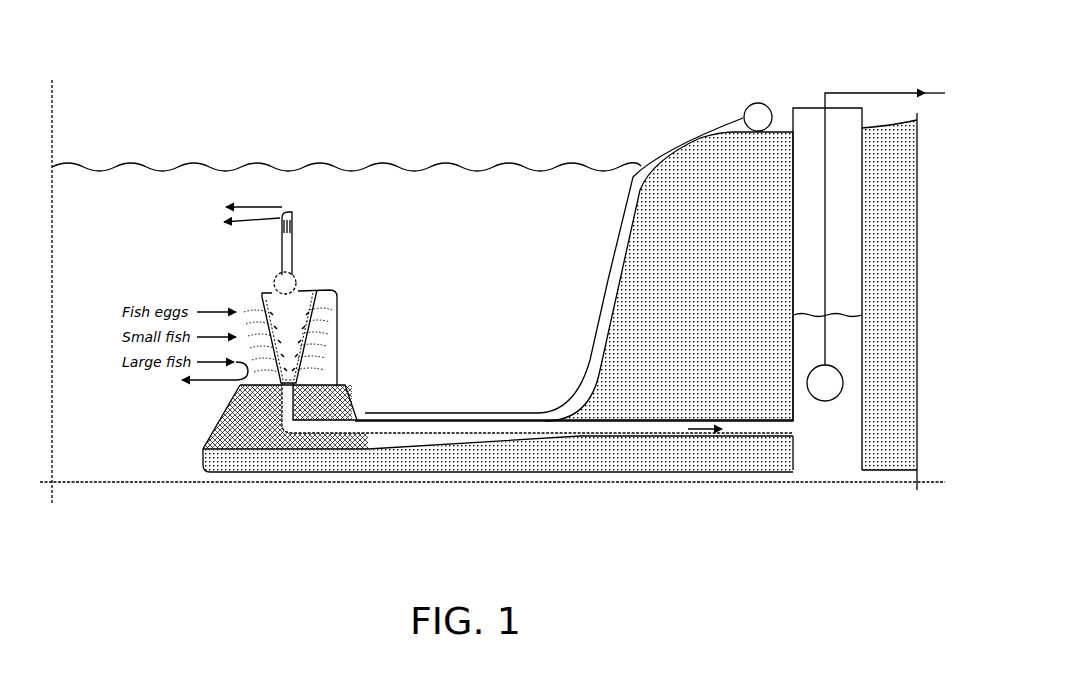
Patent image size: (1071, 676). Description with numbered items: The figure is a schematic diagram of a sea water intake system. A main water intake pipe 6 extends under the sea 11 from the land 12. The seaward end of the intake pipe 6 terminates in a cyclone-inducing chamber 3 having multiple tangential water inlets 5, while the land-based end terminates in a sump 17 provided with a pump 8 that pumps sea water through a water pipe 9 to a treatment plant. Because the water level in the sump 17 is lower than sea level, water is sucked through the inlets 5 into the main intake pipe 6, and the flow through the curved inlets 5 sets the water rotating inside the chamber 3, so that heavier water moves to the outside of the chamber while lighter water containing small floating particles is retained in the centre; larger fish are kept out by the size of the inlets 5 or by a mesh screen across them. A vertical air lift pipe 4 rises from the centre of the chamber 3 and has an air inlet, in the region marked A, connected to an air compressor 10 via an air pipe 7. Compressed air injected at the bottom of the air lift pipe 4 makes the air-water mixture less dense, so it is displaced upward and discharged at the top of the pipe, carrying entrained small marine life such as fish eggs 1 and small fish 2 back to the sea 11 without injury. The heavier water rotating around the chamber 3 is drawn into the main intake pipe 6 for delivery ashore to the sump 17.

The small marine life 1 is at (108, 208).
The small marine life 2 is at (108, 231).
The cyclone-inducing chamber 3 is at (318, 290).
The vertical air lift pipe 4 is at (280, 262).
The tangential water inlets 5 is at (314, 325).
The intake region A is at (298, 276).
The main water intake pipe 6 is at (620, 433).
The air pipe 7 is at (606, 274).
The pump 8 is at (830, 387).
The water pipe 9 is at (885, 93).
The air compressor 10 is at (762, 104).
The sea 11 is at (452, 197).
The land 12 is at (690, 183).
The sump 17 is at (810, 115).